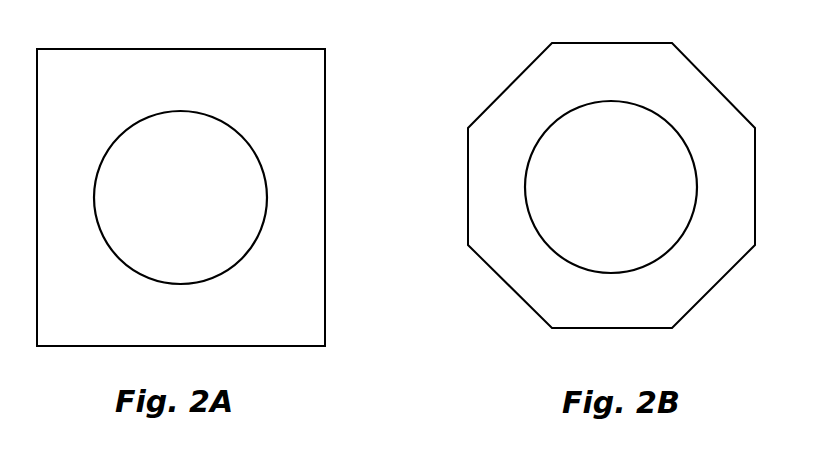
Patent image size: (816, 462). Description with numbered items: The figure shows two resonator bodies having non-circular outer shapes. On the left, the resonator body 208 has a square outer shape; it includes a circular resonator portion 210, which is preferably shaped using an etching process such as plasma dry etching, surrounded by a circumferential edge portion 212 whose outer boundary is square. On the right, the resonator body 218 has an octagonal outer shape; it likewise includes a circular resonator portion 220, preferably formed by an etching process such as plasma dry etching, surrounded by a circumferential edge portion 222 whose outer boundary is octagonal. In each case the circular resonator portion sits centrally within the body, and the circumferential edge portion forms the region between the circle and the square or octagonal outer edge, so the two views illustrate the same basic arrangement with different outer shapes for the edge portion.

In FIG. 2A, the resonator body 208 is at (226, 243).
In FIG. 2A, the circular resonator portion 210 is at (180, 197).
In FIG. 2A, the circumferential edge portion 212 is at (309, 112).
In FIG. 2B, the resonator body 218 is at (588, 215).
In FIG. 2B, the circular resonator portion 220 is at (611, 187).
In FIG. 2B, the circumferential edge portion 222 is at (682, 280).